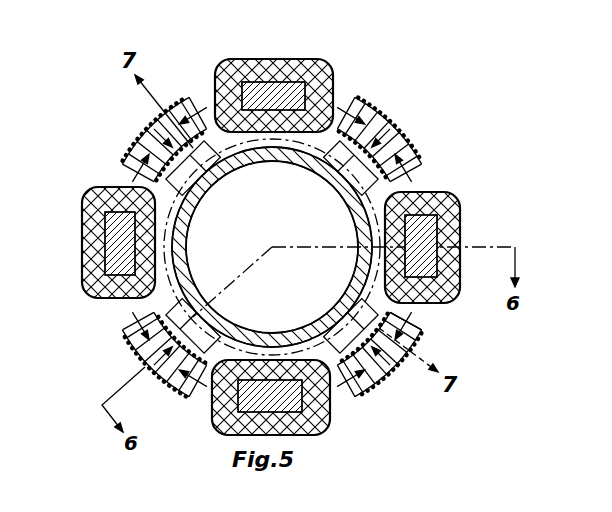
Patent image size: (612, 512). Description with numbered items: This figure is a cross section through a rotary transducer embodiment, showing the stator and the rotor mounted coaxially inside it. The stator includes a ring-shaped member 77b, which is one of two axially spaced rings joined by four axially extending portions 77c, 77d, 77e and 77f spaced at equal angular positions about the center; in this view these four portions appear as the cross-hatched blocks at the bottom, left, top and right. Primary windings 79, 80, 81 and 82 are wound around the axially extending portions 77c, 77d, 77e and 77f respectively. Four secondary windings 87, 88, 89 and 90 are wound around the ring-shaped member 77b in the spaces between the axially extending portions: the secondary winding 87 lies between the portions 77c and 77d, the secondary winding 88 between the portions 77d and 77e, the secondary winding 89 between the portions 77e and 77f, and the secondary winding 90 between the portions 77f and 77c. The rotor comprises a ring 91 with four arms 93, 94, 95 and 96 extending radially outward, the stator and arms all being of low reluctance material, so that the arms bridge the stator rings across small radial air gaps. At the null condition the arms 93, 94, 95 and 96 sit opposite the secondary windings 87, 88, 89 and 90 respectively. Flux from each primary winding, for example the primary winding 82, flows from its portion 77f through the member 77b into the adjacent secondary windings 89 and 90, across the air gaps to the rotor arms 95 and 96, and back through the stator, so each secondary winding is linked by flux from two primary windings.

The ring-shaped member 77b is at (421, 318).
The axially extending portion 77c is at (322, 400).
The axially extending portion 77d is at (110, 248).
The axially extending portion 77e is at (276, 82).
The axially extending portion 77f is at (430, 233).
The primary winding 79 is at (317, 428).
The primary winding 80 is at (92, 187).
The primary winding 81 is at (328, 70).
The primary winding 82 is at (453, 198).
The secondary winding 87 is at (170, 385).
The secondary winding 88 is at (180, 102).
The secondary winding 89 is at (400, 148).
The secondary winding 90 is at (413, 340).
The ring 91 is at (355, 278).
The rotor arm 93 is at (198, 325).
The rotor arm 94 is at (192, 173).
The rotor arm 95 is at (342, 175).
The rotor arm 96 is at (335, 320).